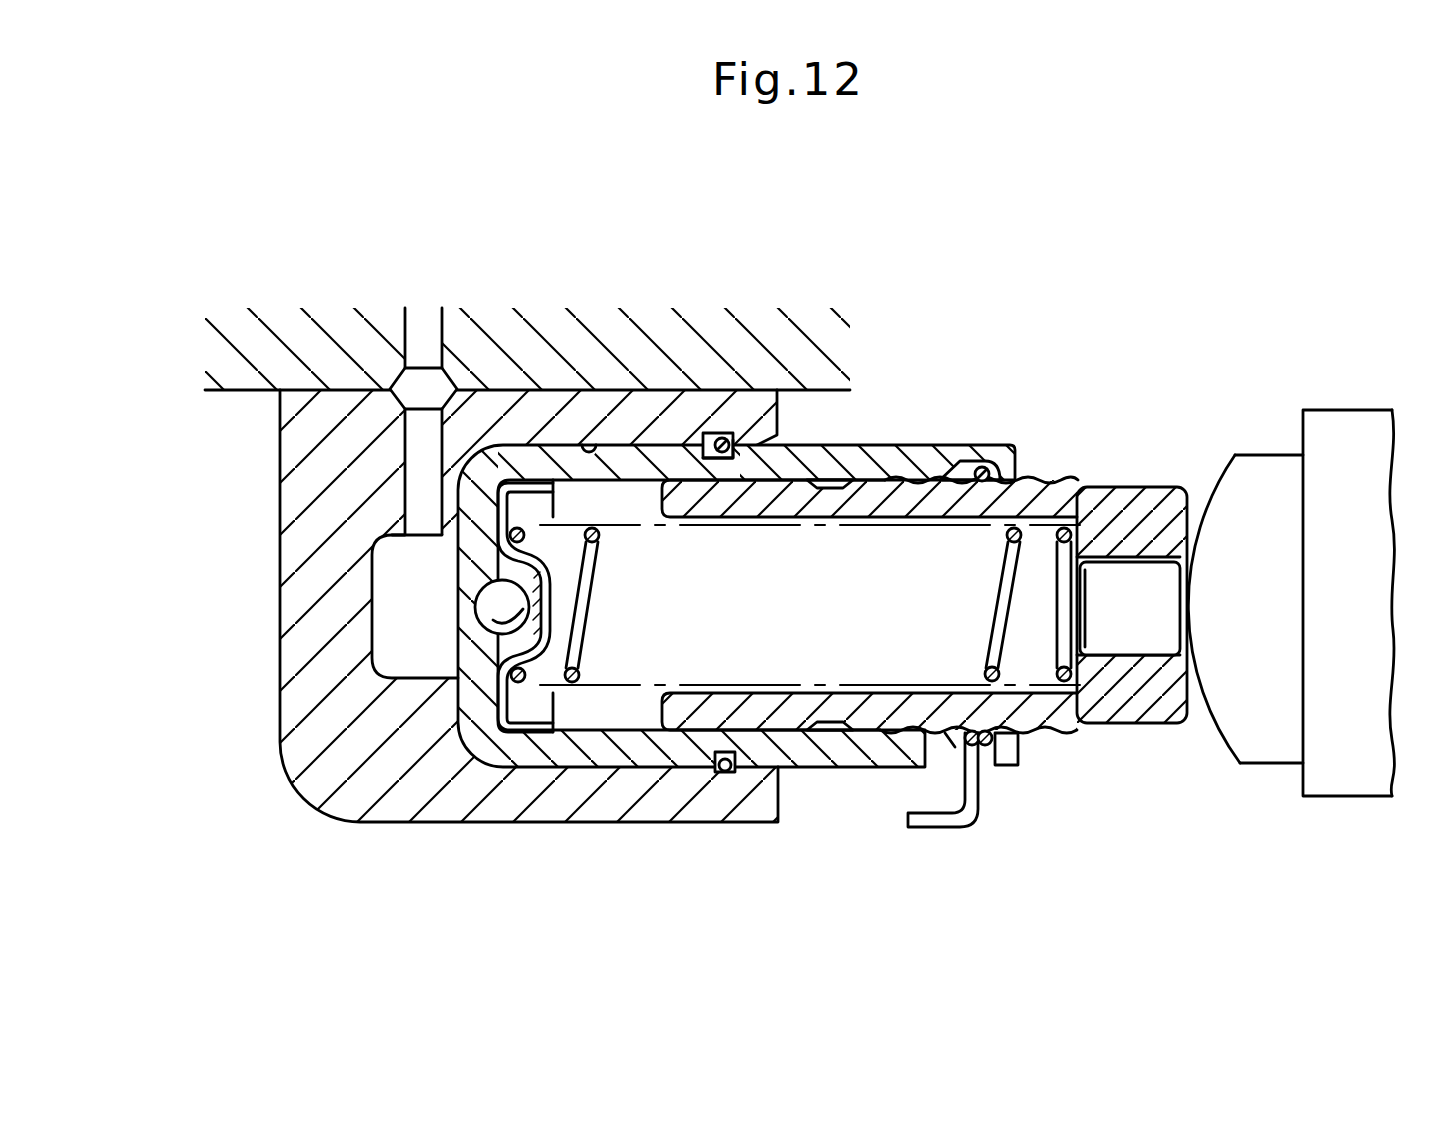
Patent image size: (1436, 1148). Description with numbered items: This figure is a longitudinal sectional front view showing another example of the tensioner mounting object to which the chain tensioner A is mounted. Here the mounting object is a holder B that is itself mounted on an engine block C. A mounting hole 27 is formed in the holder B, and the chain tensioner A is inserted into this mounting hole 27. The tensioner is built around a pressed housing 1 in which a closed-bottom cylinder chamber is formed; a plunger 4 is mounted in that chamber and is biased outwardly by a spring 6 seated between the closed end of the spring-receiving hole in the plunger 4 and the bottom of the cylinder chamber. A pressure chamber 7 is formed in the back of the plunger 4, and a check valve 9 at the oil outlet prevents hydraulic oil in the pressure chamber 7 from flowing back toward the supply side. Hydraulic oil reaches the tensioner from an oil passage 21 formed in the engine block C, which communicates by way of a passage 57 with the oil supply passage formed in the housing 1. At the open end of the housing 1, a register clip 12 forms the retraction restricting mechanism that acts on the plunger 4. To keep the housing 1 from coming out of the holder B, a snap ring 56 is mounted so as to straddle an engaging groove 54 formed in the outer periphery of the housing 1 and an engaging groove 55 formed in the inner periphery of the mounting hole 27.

The housing 1 is at (937, 453).
The plunger 4 is at (1138, 512).
The spring 6 is at (1077, 693).
The pressure chamber 7 is at (603, 720).
The check valve 9 is at (558, 615).
The register clip 12 is at (1000, 758).
The oil passage 21 is at (422, 322).
The mounting hole 27 is at (590, 447).
The engaging groove 54 is at (737, 447).
The engaging groove 55 is at (710, 447).
The snap ring 56 is at (722, 440).
The passage 57 is at (423, 490).
The chain tensioner A is at (893, 428).
The holder B is at (300, 745).
The engine block C is at (267, 355).